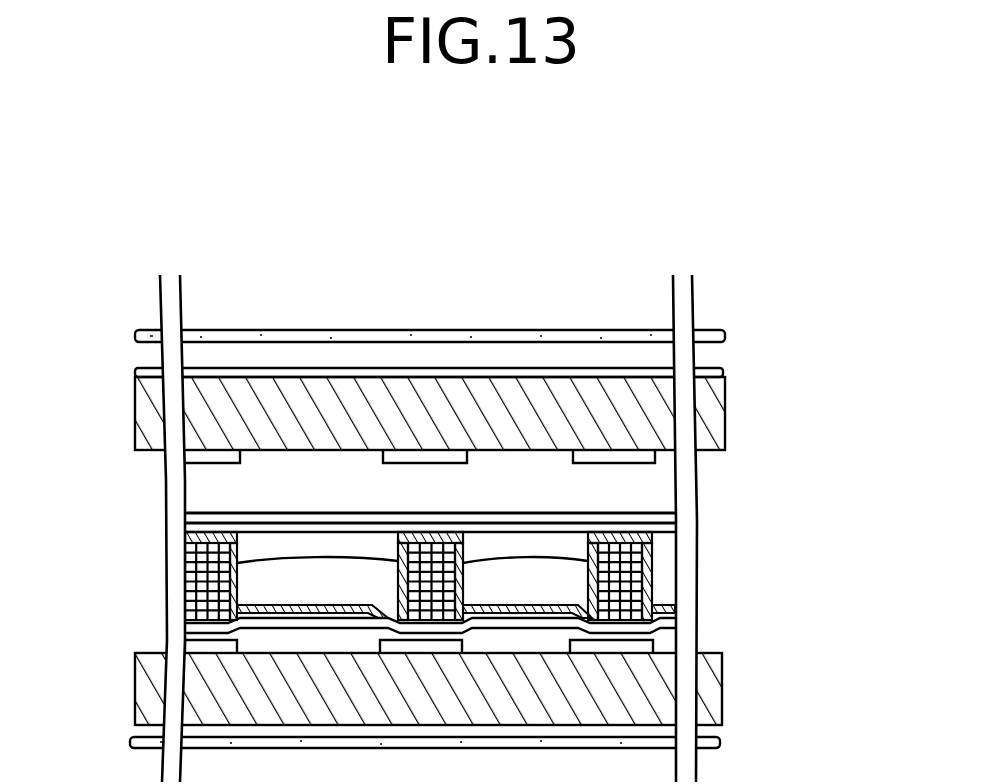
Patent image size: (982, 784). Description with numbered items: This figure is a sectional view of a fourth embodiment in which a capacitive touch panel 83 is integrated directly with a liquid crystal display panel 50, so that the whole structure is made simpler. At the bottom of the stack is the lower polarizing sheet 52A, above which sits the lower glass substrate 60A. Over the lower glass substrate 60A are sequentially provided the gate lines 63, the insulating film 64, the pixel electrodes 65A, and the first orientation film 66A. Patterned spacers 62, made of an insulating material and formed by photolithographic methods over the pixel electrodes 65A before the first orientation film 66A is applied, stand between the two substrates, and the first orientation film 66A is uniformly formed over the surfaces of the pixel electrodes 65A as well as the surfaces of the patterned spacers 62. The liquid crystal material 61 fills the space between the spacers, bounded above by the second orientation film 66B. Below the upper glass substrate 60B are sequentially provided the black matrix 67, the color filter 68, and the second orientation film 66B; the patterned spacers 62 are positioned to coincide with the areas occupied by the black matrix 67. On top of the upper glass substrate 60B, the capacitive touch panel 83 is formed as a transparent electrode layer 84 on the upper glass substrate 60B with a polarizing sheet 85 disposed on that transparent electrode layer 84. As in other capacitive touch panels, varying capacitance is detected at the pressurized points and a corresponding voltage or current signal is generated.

The capacitive touch panel 83 is at (100, 348).
The polarizing sheet 85 is at (725, 333).
The transparent electrode layer 84 is at (723, 366).
The upper glass substrate 60B is at (725, 410).
The black matrix 67 is at (655, 456).
The color filter 68 is at (670, 485).
The pixel electrodes 65A is at (670, 513).
The second orientation film 66B is at (670, 523).
The patterned spacers 62 is at (187, 558).
The liquid crystal material 61 is at (670, 566).
The first orientation film 66A is at (670, 590).
The insulating film 64 is at (673, 630).
The gate lines 63 is at (665, 640).
The lower glass substrate 60A is at (722, 685).
The lower polarizing sheet 52A is at (720, 740).
The liquid crystal display panel 50 is at (100, 628).